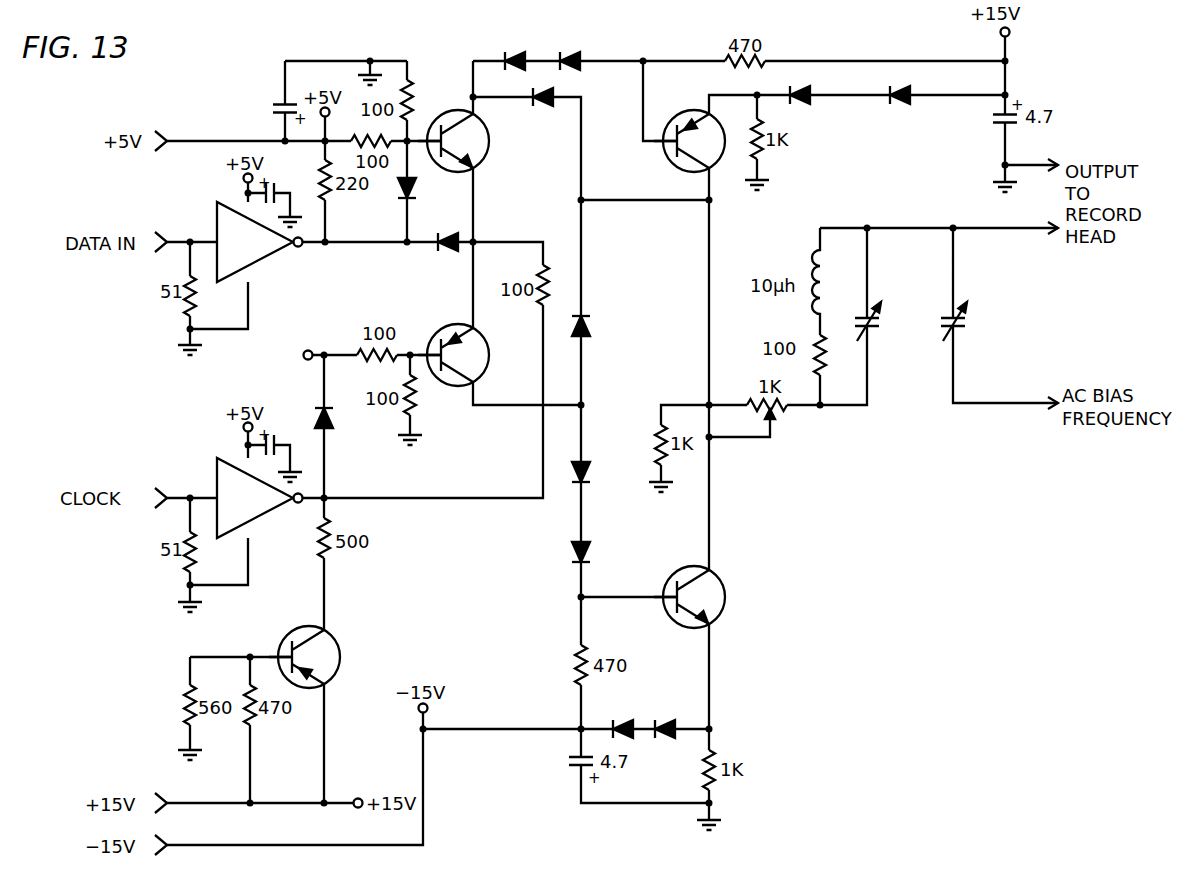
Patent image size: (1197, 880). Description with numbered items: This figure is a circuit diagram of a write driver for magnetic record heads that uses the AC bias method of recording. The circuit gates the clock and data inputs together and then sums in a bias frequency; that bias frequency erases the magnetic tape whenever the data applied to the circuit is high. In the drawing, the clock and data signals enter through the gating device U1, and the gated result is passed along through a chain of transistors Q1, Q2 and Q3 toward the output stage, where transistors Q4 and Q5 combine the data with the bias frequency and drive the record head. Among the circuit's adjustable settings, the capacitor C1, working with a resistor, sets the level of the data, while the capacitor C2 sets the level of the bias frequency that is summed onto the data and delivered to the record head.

The transistor 226 Q1 is at (474, 141).
The transistor 238 Q2 is at (474, 355).
The transistor 238 Q3 is at (325, 657).
The transistor 238 Q4 is at (687, 127).
The transistor 226 Q5 is at (710, 597).
The inverter/gate U1 is at (260, 378).
The level-setting capacitor C1 is at (896, 326).
The bias level capacitor C2 is at (984, 326).